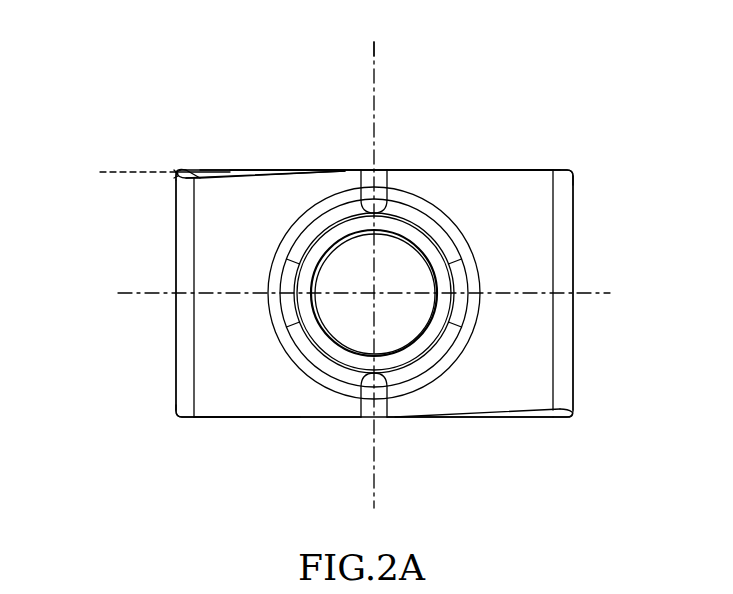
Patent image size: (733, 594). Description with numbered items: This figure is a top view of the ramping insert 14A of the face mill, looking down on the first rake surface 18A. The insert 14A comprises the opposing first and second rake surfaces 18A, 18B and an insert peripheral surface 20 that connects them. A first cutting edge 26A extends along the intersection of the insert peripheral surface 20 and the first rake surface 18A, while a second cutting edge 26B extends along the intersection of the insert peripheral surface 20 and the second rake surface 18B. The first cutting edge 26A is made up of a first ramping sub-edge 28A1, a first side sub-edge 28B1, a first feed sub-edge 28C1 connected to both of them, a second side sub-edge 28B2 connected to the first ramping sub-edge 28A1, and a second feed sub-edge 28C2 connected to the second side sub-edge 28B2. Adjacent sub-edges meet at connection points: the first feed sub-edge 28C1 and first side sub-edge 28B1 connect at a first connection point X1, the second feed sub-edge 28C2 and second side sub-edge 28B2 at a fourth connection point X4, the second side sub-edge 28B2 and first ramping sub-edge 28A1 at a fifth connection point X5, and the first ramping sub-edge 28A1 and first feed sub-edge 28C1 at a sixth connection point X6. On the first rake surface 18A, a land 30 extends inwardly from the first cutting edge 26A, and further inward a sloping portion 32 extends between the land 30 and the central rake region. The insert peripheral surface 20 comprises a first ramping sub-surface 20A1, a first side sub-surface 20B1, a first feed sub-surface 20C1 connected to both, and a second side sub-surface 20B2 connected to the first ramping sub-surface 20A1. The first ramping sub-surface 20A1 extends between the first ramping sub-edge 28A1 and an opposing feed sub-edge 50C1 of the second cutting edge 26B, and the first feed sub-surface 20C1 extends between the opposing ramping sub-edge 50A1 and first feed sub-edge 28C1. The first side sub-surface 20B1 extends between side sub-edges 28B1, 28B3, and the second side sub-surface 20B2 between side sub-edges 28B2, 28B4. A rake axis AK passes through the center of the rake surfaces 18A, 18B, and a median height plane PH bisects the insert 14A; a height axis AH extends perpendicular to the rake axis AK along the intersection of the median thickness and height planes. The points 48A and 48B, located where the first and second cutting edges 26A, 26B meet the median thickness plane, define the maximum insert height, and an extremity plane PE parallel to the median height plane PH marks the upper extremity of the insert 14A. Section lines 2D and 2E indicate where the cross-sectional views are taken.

The insert peripheral surface 20 is at (170, 386).
The insert 14A is at (507, 128).
The first ramping sub-surface 20A1 is at (205, 272).
The first side sub-surface 20B1 is at (576, 234).
The second side sub-surface 20B2 is at (176, 252).
The first feed sub-surface 20C1 is at (540, 283).
The first ramping sub-edge 28A1 is at (260, 170).
The first side sub-edge 28B1 is at (573, 173).
The second side sub-edge 28B2 is at (176, 176).
The side sub-edge 28B3 is at (573, 414).
The side sub-edge 28B4 is at (176, 417).
The first feed sub-edge 28C1 is at (488, 170).
The second feed sub-edge 28C2 is at (213, 170).
The land 30 is at (178, 172).
The sloping portion 32 is at (197, 178).
The first cutting edge 26A is at (312, 166).
The second cutting edge 26B is at (290, 422).
The first rake surface 18A is at (432, 166).
The second rake surface 18B is at (527, 426).
The point 48A is at (378, 168).
The point 48B is at (374, 419).
The ramping sub-edge 50A1 is at (500, 410).
The feed sub-edge 50C1 is at (240, 417).
The first connection point X1 is at (557, 170).
The fourth connection point X4 is at (176, 172).
The fifth connection point X5 is at (176, 178).
The sixth connection point X6 is at (374, 170).
The height axis AH is at (374, 293).
The rake axis AK is at (340, 261).
The extremity plane PE is at (124, 174).
The median height plane PH is at (351, 294).
The section line 2D is at (130, 297).
The section line 2E is at (376, 43).